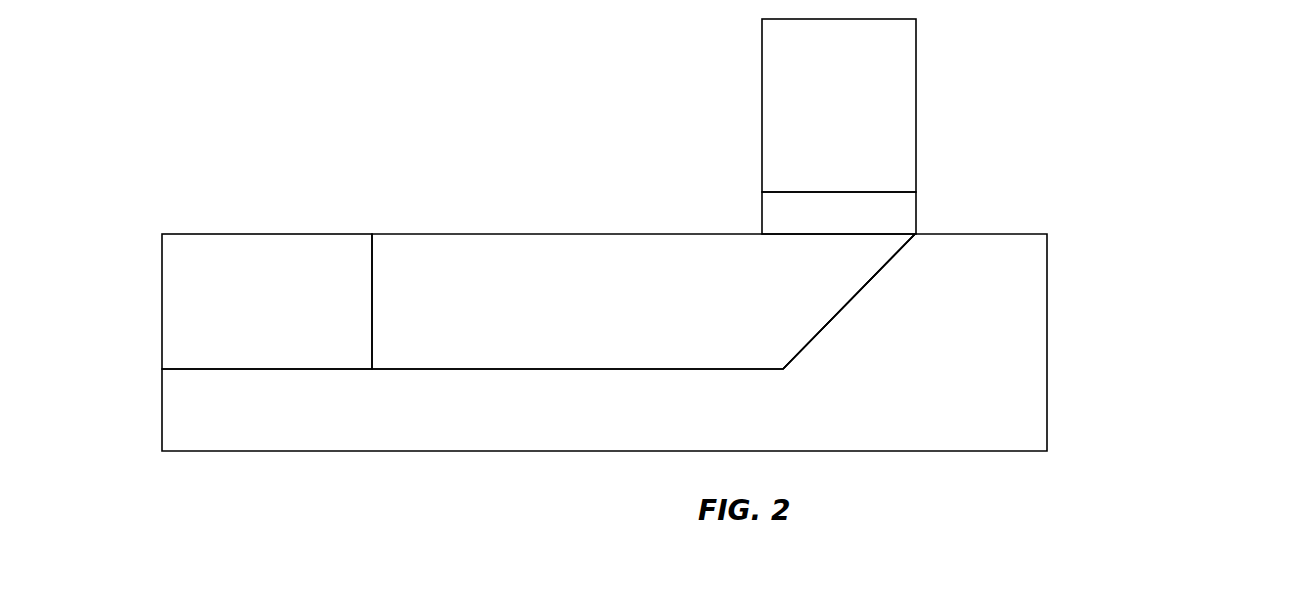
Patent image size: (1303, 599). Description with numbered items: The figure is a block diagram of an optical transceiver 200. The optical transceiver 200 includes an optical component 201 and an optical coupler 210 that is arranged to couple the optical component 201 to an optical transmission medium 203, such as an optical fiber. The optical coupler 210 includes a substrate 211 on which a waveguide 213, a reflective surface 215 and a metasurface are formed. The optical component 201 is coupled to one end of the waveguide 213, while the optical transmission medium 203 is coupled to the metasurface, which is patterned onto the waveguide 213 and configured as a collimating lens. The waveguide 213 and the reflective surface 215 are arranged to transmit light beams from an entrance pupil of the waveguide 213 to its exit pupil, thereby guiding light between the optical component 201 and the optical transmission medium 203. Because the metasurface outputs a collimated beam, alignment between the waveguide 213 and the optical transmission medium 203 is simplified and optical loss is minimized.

The optical transceiver 200 is at (694, 235).
The optical component 201 is at (267, 301).
The optical transmission medium 203 is at (839, 105).
The optical coupler 210 is at (892, 212).
The substrate 211 is at (604, 342).
The waveguide 213 is at (643, 301).
The reflective surface 215 is at (880, 285).